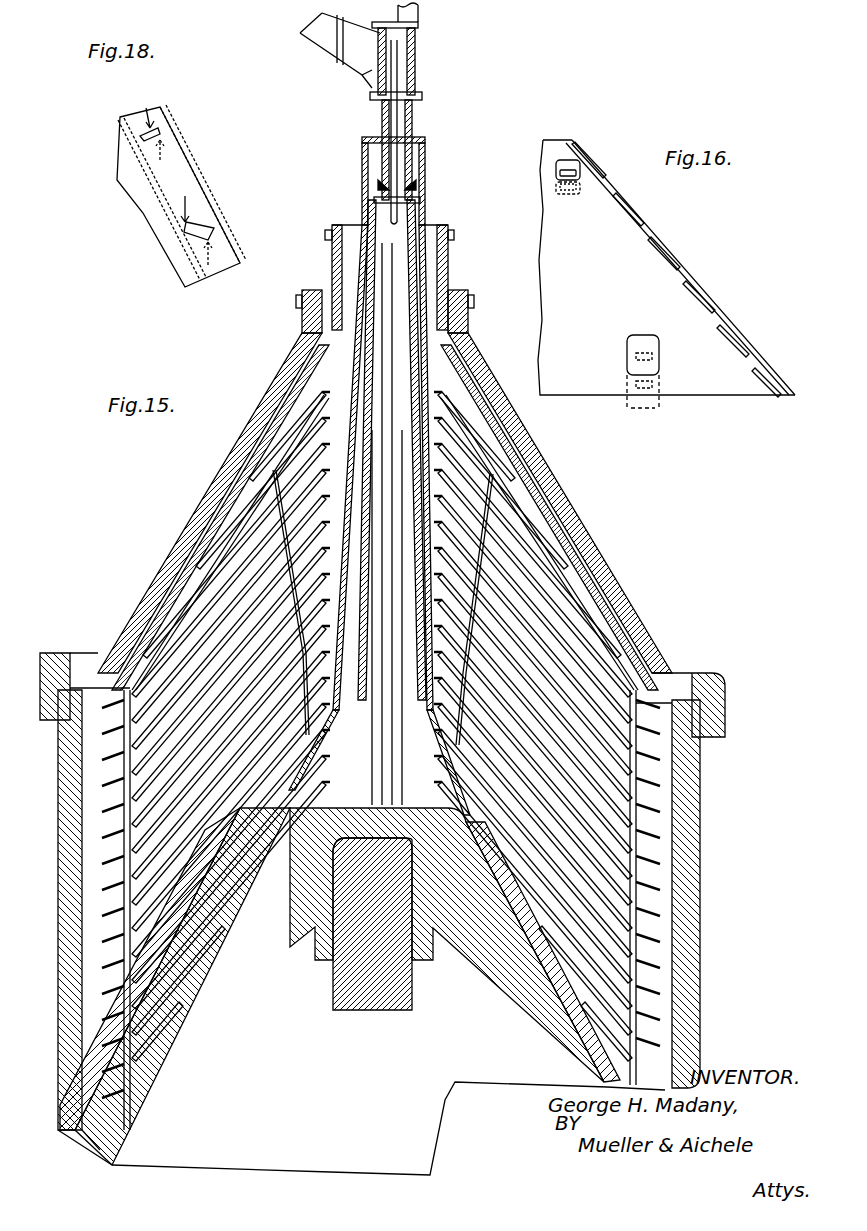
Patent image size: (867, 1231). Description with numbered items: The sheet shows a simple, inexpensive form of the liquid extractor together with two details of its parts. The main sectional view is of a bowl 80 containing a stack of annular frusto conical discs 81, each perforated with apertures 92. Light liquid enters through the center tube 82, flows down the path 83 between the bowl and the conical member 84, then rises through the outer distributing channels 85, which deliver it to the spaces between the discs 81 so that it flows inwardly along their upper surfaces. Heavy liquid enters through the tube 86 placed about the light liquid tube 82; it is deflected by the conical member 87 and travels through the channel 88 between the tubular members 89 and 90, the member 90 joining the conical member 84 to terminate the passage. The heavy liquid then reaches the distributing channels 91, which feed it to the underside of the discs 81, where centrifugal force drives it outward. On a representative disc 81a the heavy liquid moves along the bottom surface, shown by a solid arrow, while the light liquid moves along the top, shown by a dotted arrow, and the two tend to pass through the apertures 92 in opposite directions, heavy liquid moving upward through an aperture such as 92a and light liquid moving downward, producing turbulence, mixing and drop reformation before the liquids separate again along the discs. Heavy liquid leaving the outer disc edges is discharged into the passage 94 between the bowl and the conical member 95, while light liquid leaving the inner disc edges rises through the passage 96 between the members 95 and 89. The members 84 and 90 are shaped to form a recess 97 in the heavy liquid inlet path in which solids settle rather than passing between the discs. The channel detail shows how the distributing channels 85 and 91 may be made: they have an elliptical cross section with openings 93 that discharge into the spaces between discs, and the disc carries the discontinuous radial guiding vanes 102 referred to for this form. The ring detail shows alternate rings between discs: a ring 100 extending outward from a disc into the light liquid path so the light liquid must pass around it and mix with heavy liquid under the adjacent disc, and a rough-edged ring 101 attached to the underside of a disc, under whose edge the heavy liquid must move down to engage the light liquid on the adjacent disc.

In FIG. 15, the bowl 80 is at (606, 574).
In FIG. 15, the annular frusto conical discs 81 is at (588, 632).
In FIG. 15, the disc 81a is at (254, 560).
In FIG. 15, the center tube 82 is at (394, 120).
In FIG. 15, the path 83 is at (540, 940).
In FIG. 15, the conical member 84 is at (573, 962).
In FIG. 16, the outer distributing channels 85 is at (656, 338).
In FIG. 15, the outer distributing channels 85 is at (640, 880).
In FIG. 15, the tube 86 is at (410, 132).
In FIG. 15, the conical member 87 is at (412, 184).
In FIG. 15, the channel 88 is at (358, 352).
In FIG. 15, the tubular member 89 is at (352, 300).
In FIG. 15, the tubular member 90 is at (355, 290).
In FIG. 16, the distributing channels 91 is at (580, 160).
In FIG. 15, the distributing channels 91 is at (494, 486).
In FIG. 15, the apertures 92 is at (526, 520).
In FIG. 15, the aperture 92a is at (226, 568).
In FIG. 16, the openings 93 is at (556, 182).
In FIG. 15, the openings 93 is at (272, 484).
In FIG. 15, the passage 94 is at (182, 578).
In FIG. 15, the conical member 95 is at (300, 386).
In FIG. 15, the passage 96 is at (345, 232).
In FIG. 15, the recess 97 is at (285, 788).
In FIG. 18, the ring 100 is at (150, 134).
In FIG. 18, the ring 101 is at (214, 226).
In FIG. 16, the slots 102 is at (704, 297).